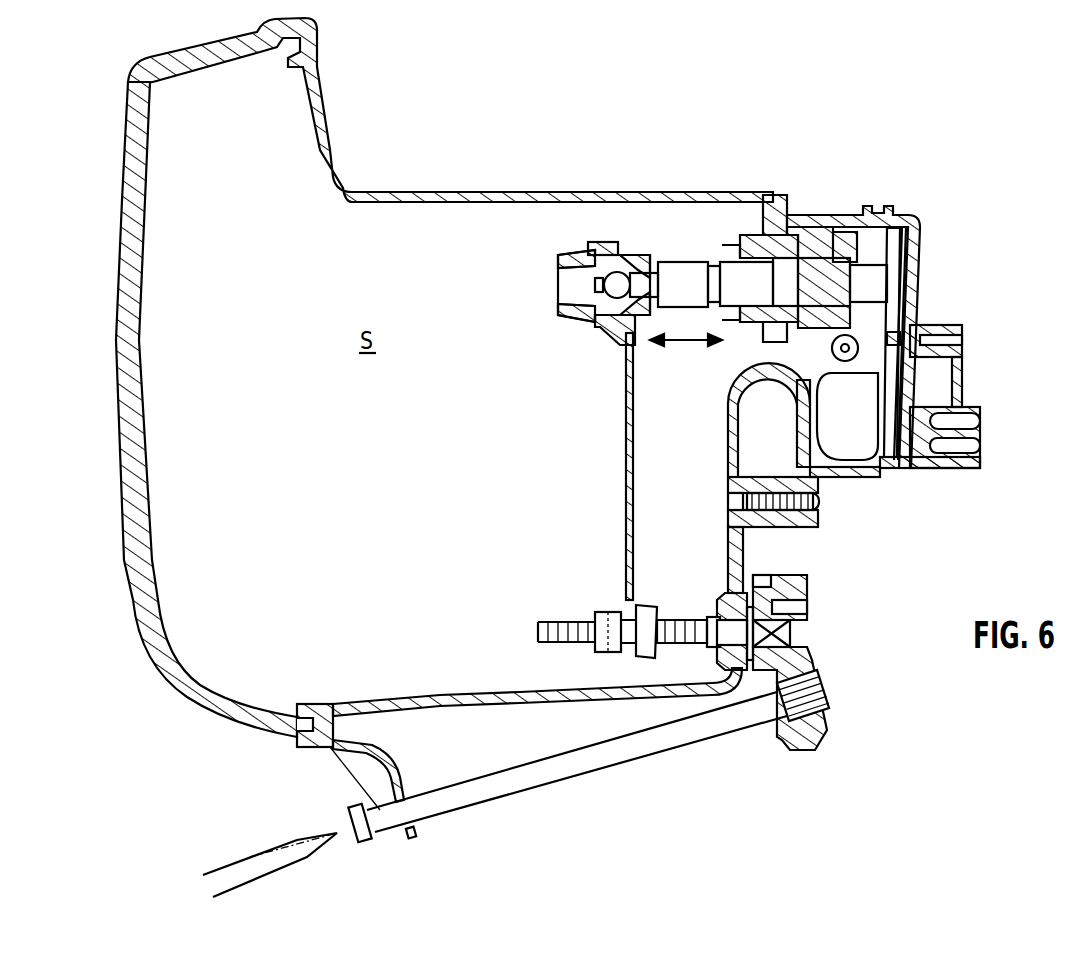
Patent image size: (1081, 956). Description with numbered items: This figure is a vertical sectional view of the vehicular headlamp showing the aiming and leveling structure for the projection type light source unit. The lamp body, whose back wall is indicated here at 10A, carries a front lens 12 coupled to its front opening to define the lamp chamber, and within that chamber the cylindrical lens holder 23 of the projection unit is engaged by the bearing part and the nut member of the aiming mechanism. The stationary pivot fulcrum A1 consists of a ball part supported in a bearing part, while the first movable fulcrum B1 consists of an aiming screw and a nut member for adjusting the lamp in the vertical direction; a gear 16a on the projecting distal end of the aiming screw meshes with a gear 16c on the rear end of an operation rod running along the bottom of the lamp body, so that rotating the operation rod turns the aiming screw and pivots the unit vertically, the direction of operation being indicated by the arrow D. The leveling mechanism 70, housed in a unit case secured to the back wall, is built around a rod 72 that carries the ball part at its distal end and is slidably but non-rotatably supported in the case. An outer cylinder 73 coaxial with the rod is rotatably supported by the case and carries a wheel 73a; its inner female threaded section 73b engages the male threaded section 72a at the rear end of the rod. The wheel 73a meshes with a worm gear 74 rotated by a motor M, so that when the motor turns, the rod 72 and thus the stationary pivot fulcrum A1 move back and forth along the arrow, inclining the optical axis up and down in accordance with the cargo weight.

The casing 10A is at (397, 190).
The front lens 12 is at (116, 332).
The lens holder 23 is at (622, 436).
The stationary pivot fulcrum A1 is at (652, 106).
The rod 72 is at (748, 257).
The male threaded section 72a is at (812, 262).
The wheel 73a is at (843, 232).
The leveling mechanism 70 is at (898, 209).
The outer cylinder 73 is at (906, 230).
The female threaded section 73b is at (888, 283).
The worm gear 74 is at (860, 349).
The motor M is at (870, 458).
The first movable fulcrum B1 is at (720, 826).
The gear 16a is at (797, 641).
The gear 16c is at (828, 698).
The direction arrow D is at (327, 840).